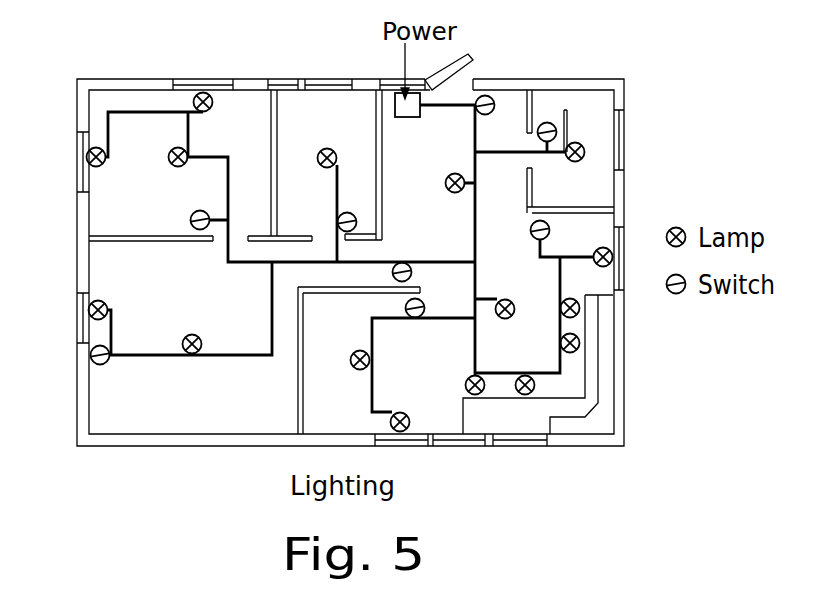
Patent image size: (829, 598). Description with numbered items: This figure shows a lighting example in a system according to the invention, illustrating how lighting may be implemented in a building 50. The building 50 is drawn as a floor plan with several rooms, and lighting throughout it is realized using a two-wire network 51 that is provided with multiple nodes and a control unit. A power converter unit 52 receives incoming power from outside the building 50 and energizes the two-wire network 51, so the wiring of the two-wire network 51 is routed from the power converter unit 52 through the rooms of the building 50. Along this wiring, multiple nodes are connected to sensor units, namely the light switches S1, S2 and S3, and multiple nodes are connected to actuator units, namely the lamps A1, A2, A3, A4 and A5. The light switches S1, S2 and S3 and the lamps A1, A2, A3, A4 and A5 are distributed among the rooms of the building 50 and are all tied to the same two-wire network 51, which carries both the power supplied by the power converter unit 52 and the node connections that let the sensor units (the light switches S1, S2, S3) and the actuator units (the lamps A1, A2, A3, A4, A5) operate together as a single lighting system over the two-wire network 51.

The building 50 is at (93, 60).
The two-wire network 51 is at (244, 356).
The power converter unit 52 is at (400, 78).
The lamp A1 is at (437, 179).
The lamp A2 is at (523, 333).
The lamp A3 is at (145, 313).
The lamp A4 is at (393, 391).
The lamp A5 is at (150, 161).
The light switch S1 is at (501, 108).
The light switch S2 is at (109, 374).
The light switch S3 is at (411, 254).